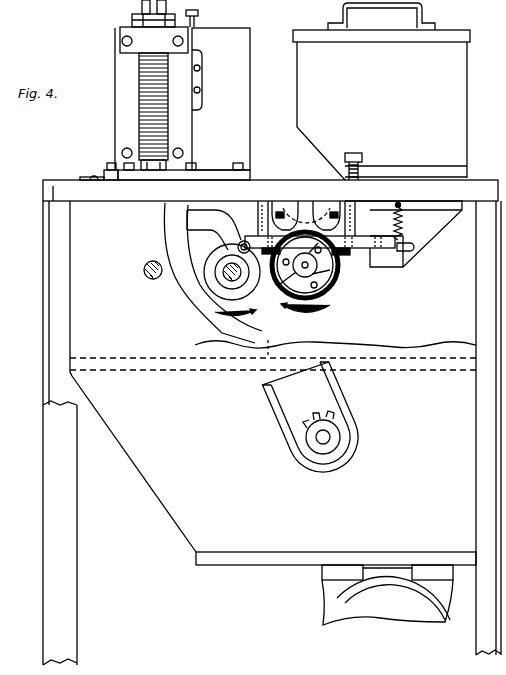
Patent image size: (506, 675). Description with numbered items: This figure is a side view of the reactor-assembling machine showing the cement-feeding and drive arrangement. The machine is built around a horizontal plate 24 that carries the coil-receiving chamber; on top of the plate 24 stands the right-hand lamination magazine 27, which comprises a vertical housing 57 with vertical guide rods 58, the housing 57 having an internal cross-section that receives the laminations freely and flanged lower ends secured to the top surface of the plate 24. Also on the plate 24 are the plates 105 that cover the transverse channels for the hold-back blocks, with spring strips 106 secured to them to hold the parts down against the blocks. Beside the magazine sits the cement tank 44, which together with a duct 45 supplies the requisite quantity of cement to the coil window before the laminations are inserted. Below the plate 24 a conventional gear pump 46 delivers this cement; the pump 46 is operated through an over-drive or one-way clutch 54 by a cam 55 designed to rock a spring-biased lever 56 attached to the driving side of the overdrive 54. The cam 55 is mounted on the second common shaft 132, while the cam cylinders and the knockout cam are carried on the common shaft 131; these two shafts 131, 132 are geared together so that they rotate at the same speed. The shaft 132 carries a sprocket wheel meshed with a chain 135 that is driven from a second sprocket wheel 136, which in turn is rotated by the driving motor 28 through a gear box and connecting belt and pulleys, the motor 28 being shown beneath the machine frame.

The horizontal plate 24 is at (55, 193).
The plates 105 is at (59, 180).
The spring strips 106 is at (81, 177).
The vertical housing 57 is at (118, 63).
The vertical guide rods 58 is at (137, 20).
The right-hand lamination magazine 27 is at (193, 127).
The cement tank 44 is at (458, 86).
The gear pump 46 is at (292, 226).
The over-drive or one-way clutch 54 is at (340, 283).
The cam 55 is at (252, 296).
The second common shaft 132 is at (228, 275).
The common shaft 131 is at (143, 268).
The duct 45 is at (210, 235).
The spring-biased lever 56 is at (381, 251).
The chain 135 is at (272, 412).
The second sprocket wheel 136 is at (296, 443).
The driving motor 28 is at (340, 615).